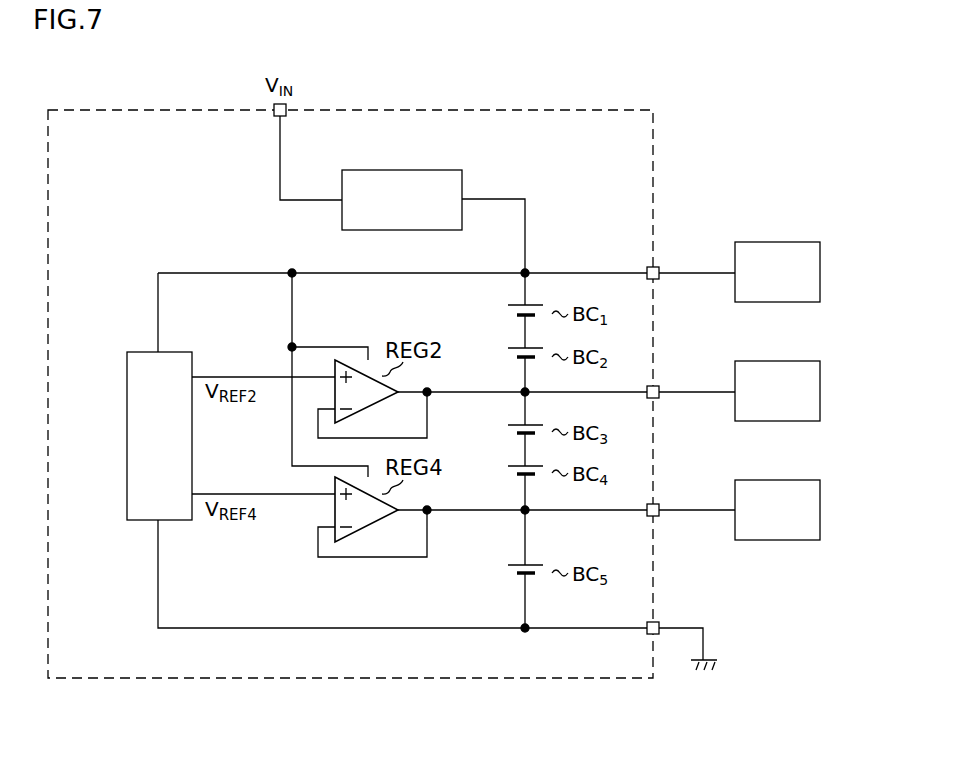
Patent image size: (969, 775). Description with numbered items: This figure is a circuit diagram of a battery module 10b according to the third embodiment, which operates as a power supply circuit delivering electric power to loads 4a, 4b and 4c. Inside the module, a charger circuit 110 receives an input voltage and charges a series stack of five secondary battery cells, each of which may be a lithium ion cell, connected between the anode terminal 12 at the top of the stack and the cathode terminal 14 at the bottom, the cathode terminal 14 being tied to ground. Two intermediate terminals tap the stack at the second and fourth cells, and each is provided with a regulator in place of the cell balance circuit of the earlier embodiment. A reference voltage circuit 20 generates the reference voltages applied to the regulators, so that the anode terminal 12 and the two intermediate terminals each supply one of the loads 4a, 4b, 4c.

The battery module 10b is at (402, 680).
The charger circuit 110 is at (423, 170).
The reference voltage circuit 20 is at (127, 413).
The anode terminal 12 is at (660, 268).
The cathode terminal 14 is at (660, 623).
The load 4a is at (785, 242).
The load 4b is at (785, 361).
The load 4c is at (785, 480).